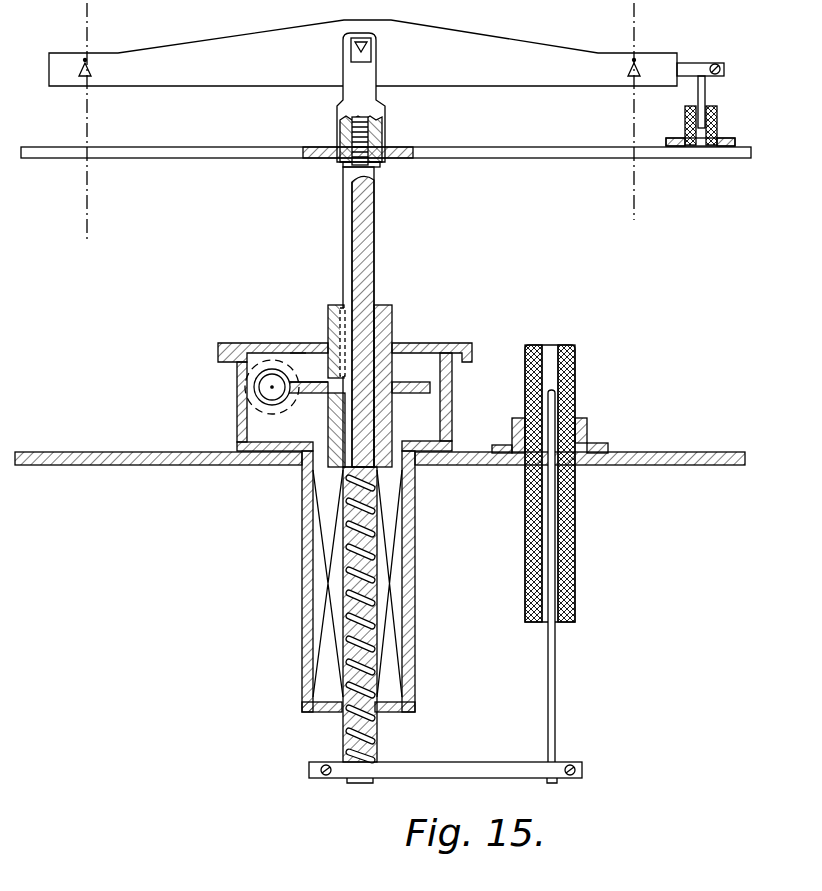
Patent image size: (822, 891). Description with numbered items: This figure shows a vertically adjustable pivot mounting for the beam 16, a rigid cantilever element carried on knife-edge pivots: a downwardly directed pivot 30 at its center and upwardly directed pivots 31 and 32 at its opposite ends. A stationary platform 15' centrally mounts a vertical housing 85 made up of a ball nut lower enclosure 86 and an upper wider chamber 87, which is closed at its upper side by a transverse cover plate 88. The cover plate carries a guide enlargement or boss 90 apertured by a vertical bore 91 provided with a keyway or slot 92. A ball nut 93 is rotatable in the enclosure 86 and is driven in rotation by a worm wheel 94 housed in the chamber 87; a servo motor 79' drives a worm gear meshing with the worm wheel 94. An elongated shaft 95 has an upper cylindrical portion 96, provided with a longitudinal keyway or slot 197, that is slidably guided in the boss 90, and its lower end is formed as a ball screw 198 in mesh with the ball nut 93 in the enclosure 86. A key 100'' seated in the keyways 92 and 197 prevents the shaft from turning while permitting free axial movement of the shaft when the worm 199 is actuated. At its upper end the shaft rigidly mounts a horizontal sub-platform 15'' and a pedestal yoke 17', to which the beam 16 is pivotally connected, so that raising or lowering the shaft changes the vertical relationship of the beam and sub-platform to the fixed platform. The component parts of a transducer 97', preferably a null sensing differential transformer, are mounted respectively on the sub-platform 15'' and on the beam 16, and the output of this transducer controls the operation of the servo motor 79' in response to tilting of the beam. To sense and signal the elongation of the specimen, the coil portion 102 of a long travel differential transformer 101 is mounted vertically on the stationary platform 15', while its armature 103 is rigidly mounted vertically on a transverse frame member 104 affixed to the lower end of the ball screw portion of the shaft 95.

The beam 16 is at (532, 28).
The upwardly directed pivot 31 is at (88, 68).
The upwardly directed pivot 32 is at (637, 65).
The downwardly directed pivot 30 is at (354, 57).
The pedestal yoke 17' is at (392, 137).
The sub-platform 15'' is at (386, 170).
The transducer 97' is at (725, 104).
The longitudinal keyway 197 is at (346, 222).
The elongated shaft 95 is at (422, 219).
The upper cylindrical portion 96 is at (366, 248).
The keyway 92 is at (328, 313).
The transverse cover plate 88 is at (245, 343).
The servo motor 79' is at (289, 330).
The guide enlargement or boss 90 is at (393, 314).
The upper wider chamber 87 is at (238, 362).
The pin 100'' is at (311, 370).
The vertical bore 91 is at (404, 372).
The worm 199 is at (257, 398).
The worm wheel 94 is at (330, 420).
The stationary platform 15' is at (380, 480).
The long travel differential transformer 101 is at (527, 548).
The coil portion 102 is at (575, 388).
The armature 103 is at (553, 508).
The ball nut lower enclosure 86 is at (313, 606).
The vertical housing 85 is at (302, 498).
The ball nut 93 is at (322, 560).
The ball screw 198 is at (353, 633).
The transverse frame member 104 is at (493, 750).